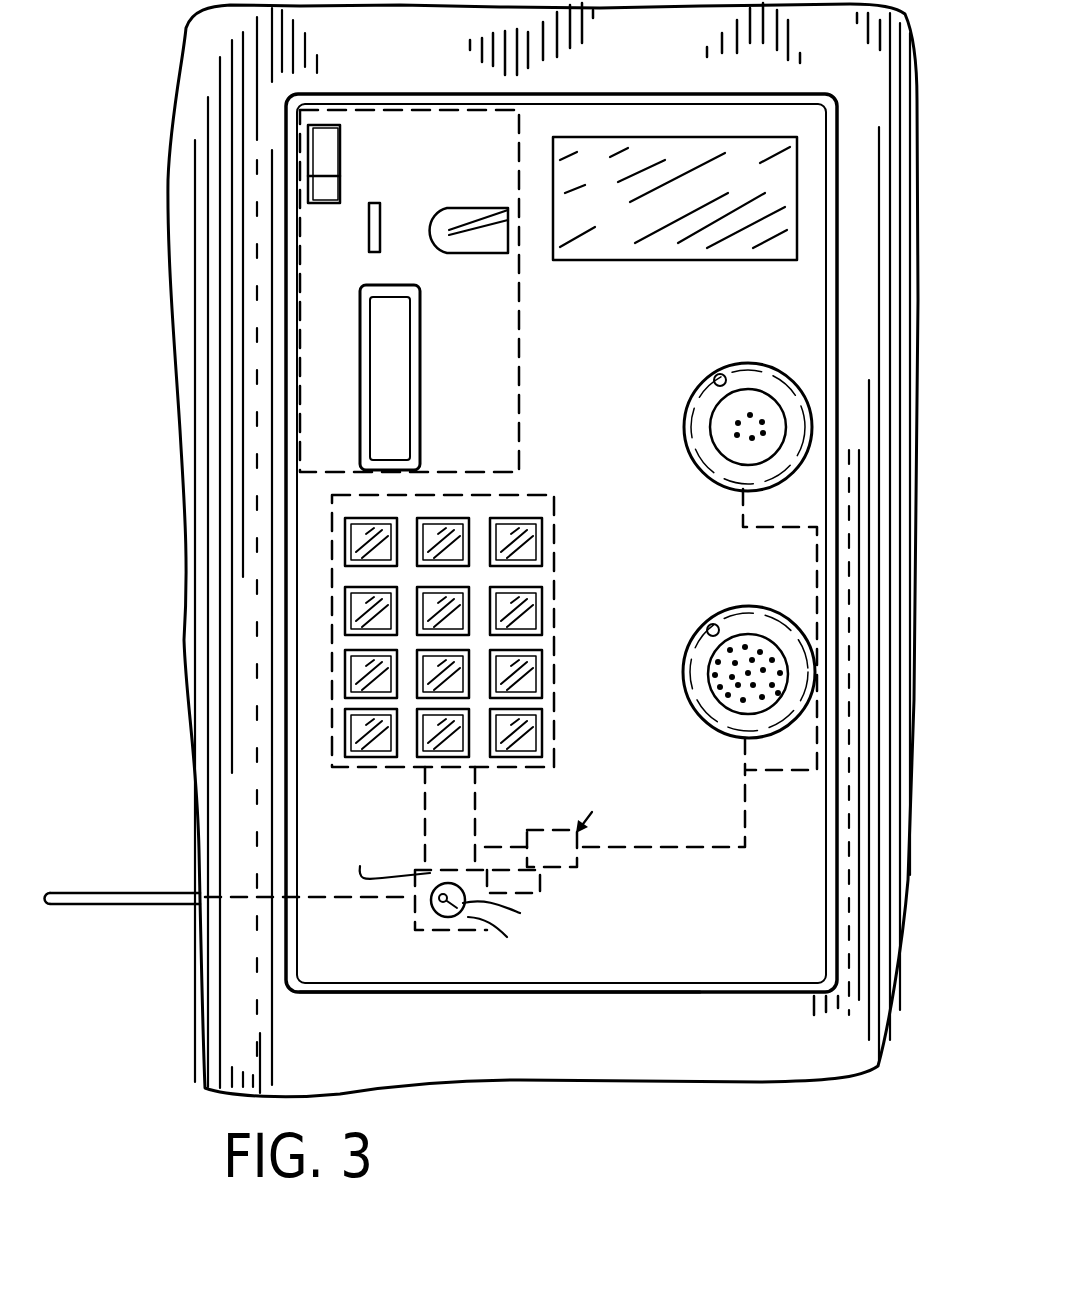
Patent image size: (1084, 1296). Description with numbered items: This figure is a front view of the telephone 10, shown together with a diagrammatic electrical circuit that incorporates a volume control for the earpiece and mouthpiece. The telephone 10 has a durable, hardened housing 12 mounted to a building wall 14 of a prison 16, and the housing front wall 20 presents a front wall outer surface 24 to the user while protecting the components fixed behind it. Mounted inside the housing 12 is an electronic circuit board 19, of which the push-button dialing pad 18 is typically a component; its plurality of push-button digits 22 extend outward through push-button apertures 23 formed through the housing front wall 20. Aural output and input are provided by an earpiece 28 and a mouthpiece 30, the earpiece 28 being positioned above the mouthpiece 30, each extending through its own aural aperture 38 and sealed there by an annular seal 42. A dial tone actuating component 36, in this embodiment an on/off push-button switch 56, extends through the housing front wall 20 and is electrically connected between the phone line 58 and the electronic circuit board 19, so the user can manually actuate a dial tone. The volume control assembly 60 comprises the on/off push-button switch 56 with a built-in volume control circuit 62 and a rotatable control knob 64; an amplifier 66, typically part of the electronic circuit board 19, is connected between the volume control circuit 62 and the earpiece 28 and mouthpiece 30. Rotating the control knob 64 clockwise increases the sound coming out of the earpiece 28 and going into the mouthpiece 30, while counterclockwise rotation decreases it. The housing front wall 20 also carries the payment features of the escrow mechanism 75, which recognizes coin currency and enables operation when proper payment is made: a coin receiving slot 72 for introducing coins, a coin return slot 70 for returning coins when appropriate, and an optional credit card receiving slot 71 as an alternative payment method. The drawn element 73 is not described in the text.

The telephone 10 is at (609, 78).
The housing 12 is at (370, 86).
The building wall 14 is at (185, 192).
The prison 16 is at (175, 397).
The push-button dialing pad 18 is at (556, 601).
The electronic circuit board 19 is at (560, 492).
The housing front wall 20 is at (352, 967).
The push-button digits 22 is at (545, 672).
The push-button apertures 23 is at (336, 530).
The front wall outer surface 24 is at (692, 319).
The earpiece 28 is at (712, 431).
The mouthpiece 30 is at (716, 708).
The dial tone actuating component 36 is at (448, 866).
The aural aperture 38 is at (716, 380).
The annular seals 42 is at (792, 376).
The on/off push-button switch 56 is at (433, 912).
The phone line 58 is at (117, 893).
The volume control assembly 60 is at (567, 887).
The volume control circuit 62 is at (386, 852).
The rotatable control knob 64 is at (589, 950).
The amplifier 66 is at (562, 876).
The coin return slot 70 is at (390, 412).
The credit card receiving slot 71 is at (312, 176).
The coin receiving slot 72 is at (378, 222).
The lever 73 is at (447, 237).
The escrow mechanism 75 is at (487, 347).